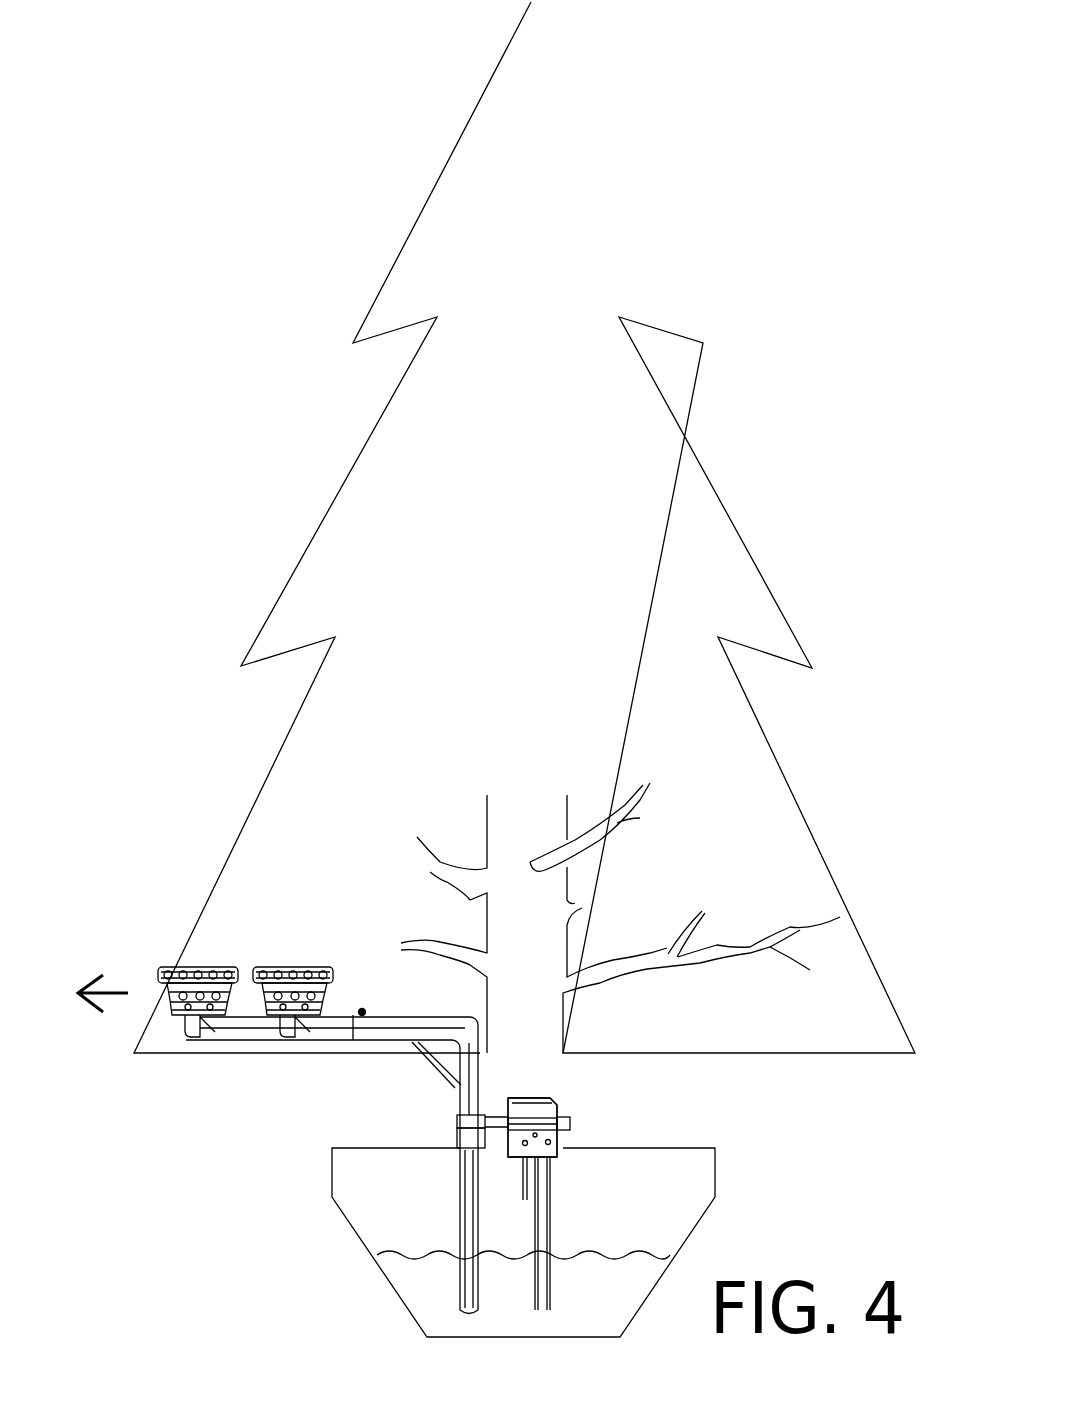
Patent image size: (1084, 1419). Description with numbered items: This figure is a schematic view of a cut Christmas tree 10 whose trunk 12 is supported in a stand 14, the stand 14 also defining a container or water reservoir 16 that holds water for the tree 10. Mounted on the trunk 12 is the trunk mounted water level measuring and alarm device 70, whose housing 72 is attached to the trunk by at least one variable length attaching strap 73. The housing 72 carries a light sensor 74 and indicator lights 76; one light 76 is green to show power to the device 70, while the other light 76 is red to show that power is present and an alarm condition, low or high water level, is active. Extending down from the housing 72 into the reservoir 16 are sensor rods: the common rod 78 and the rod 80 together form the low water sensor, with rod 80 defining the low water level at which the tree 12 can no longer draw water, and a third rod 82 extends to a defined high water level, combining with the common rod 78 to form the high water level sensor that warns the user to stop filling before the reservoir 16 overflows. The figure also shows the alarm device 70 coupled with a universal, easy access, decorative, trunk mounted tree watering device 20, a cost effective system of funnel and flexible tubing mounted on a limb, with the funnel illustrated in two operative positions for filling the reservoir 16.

The Christmas tree 10 is at (542, 283).
The trunk 12 is at (512, 823).
The stand 14 is at (717, 1170).
The water reservoir 16 is at (613, 1333).
The trunk mounted Christmas tree watering device 20 is at (348, 1063).
The water level measuring and alarm device 70 is at (533, 1085).
The housing 72 is at (548, 1113).
The variable length attaching strap 73 is at (463, 1132).
The light sensor 74 is at (562, 1138).
The indicator lights 76 is at (538, 1136).
The common sensor rod 78 is at (550, 1265).
The low water level sensor rod 80 is at (533, 1273).
The high water level sensor rod 82 is at (523, 1190).